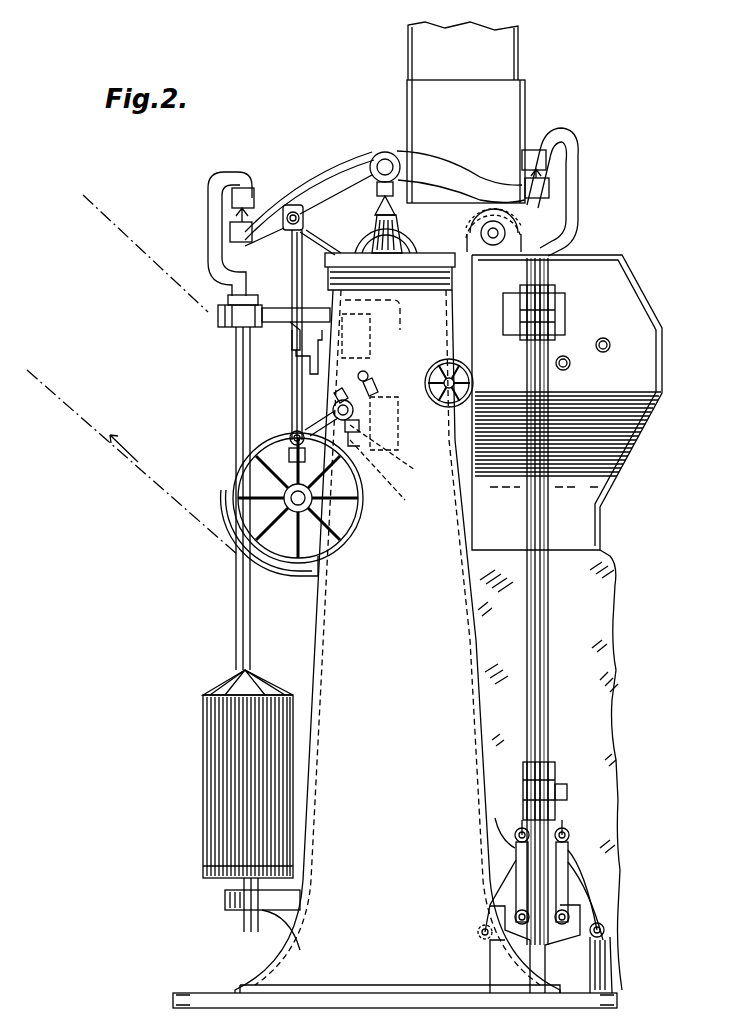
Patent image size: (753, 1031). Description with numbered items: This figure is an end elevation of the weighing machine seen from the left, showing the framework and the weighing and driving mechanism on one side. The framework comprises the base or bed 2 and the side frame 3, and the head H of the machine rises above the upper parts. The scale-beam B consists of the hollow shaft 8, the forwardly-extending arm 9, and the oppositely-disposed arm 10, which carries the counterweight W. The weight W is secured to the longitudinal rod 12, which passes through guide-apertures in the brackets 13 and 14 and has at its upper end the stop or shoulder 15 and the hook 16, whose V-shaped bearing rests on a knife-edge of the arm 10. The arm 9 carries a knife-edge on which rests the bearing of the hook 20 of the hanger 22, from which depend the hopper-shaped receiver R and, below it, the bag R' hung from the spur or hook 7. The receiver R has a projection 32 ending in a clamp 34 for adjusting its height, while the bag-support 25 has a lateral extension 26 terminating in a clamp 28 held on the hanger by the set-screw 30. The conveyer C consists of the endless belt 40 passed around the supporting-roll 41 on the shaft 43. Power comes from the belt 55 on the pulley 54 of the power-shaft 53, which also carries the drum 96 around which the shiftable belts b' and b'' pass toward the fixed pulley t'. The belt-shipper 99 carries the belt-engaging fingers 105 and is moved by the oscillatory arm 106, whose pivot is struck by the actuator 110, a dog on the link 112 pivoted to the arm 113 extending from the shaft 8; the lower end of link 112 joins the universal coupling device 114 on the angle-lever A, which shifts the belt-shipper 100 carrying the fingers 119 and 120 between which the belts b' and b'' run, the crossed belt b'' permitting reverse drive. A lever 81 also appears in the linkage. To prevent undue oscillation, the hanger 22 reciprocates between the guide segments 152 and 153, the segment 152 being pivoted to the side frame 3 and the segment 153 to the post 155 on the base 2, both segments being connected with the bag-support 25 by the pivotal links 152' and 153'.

The base or bed 2 is at (316, 996).
The side frame 3 is at (397, 611).
The spur or hook 7 is at (604, 552).
The hollow shaft 8 is at (400, 156).
The arm 9 is at (476, 180).
The arm 10 is at (333, 178).
The longitudinal rod or bar 12 is at (240, 381).
The bracket 13 is at (218, 317).
The bracket 14 is at (225, 898).
The stop or shoulder 15 is at (228, 299).
The hook 16 is at (210, 194).
The hook 20 is at (573, 168).
The hanger 22 is at (549, 502).
The bag-support 25 is at (612, 932).
The lateral extension 26 is at (568, 842).
The clamp 28 is at (554, 765).
The set-screw 30 is at (567, 790).
The projection 32 is at (556, 314).
The clamp 34 is at (556, 300).
The endless belt 40 is at (446, 286).
The supporting-roll 41 is at (508, 248).
The shaft 43 is at (493, 246).
The power-shaft 53 is at (248, 482).
The pulley 54 is at (234, 515).
The belt 55 is at (146, 470).
The lever 81 is at (318, 246).
The power transmitter or drum 96 is at (240, 548).
The belt-shipper 99 is at (368, 372).
The belt-shipper 100 is at (333, 408).
The belt-engaging fingers 105 is at (376, 382).
The oscillatory arm 106 is at (378, 338).
The belt-shipper actuator 110 is at (290, 356).
The connecting-link 112 is at (291, 243).
The arm 113 is at (352, 185).
The universal coupling device 114 is at (290, 440).
The belt-engaging finger 119 is at (344, 390).
The belt-engaging finger 120 is at (360, 428).
The segment 152 is at (499, 949).
The segment 153 is at (562, 949).
The link 152' is at (480, 878).
The link 153' is at (614, 895).
The post 155 is at (606, 975).
The angle-lever A is at (300, 416).
The scale-beam B is at (384, 192).
The conveyer C is at (494, 230).
The head H is at (466, 112).
The receiver R is at (569, 402).
The bag R' is at (550, 770).
The counterweight W is at (210, 772).
The fixed pulley t' is at (456, 374).
The belt b' is at (389, 476).
The belt b'' is at (392, 455).